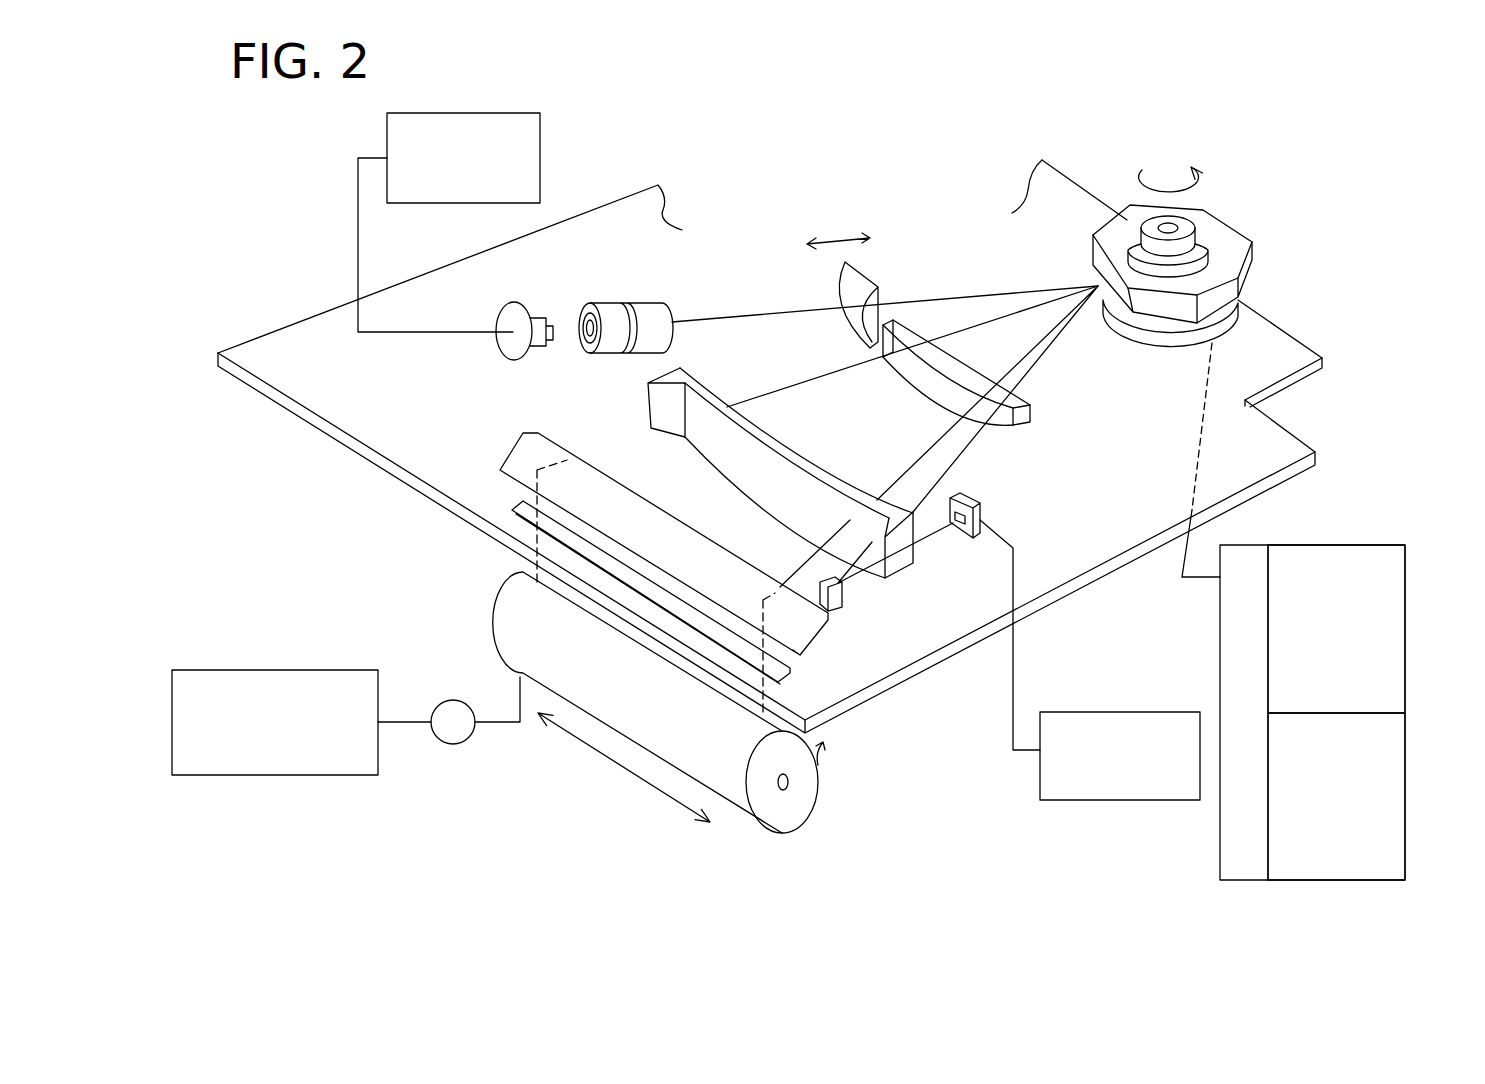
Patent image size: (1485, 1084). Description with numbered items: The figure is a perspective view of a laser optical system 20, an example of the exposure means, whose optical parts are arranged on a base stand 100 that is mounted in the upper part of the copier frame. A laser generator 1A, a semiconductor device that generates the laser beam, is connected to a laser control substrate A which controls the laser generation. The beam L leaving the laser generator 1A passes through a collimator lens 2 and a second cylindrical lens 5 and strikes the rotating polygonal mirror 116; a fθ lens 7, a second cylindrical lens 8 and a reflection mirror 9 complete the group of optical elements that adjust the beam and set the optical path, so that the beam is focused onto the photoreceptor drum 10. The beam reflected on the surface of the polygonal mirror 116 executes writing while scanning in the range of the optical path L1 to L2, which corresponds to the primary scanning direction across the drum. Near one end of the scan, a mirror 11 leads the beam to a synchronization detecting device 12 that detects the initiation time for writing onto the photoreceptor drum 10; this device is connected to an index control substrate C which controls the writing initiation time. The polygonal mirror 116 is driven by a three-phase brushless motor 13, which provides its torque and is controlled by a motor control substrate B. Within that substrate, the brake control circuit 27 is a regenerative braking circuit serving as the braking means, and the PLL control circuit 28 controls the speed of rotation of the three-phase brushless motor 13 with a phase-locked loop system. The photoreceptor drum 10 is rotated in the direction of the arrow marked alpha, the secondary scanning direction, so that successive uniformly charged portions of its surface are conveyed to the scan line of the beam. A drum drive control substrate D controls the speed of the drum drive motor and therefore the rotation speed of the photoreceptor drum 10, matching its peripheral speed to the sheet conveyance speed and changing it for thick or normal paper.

The laser generator 1A is at (512, 313).
The collimator lens 2 is at (640, 315).
The second cylindrical lens 5 is at (872, 282).
The fθ lens 7 is at (905, 372).
The second cylindrical lens 8 is at (806, 455).
The reflection mirror 9 is at (818, 640).
The photoreceptor drum 10 is at (492, 605).
The mirror 11 is at (845, 594).
The synchronization detecting device 12 is at (960, 538).
The three-phase brushless motor 13 is at (1160, 343).
The laser optical system 20 is at (971, 205).
The base stand 100 is at (1118, 540).
The polygonal mirror 116 is at (1130, 212).
The brake control circuit 27 is at (1405, 595).
The PLL control circuit 28 is at (1405, 762).
The laser control substrate A is at (505, 113).
The motor control substrate B is at (1318, 545).
The index control substrate C is at (1105, 712).
The drum drive control substrate D is at (293, 777).
The laser beam optical path L is at (725, 312).
The optical path (scan range start) L1 is at (778, 400).
The optical path (scan range end) L2 is at (893, 483).